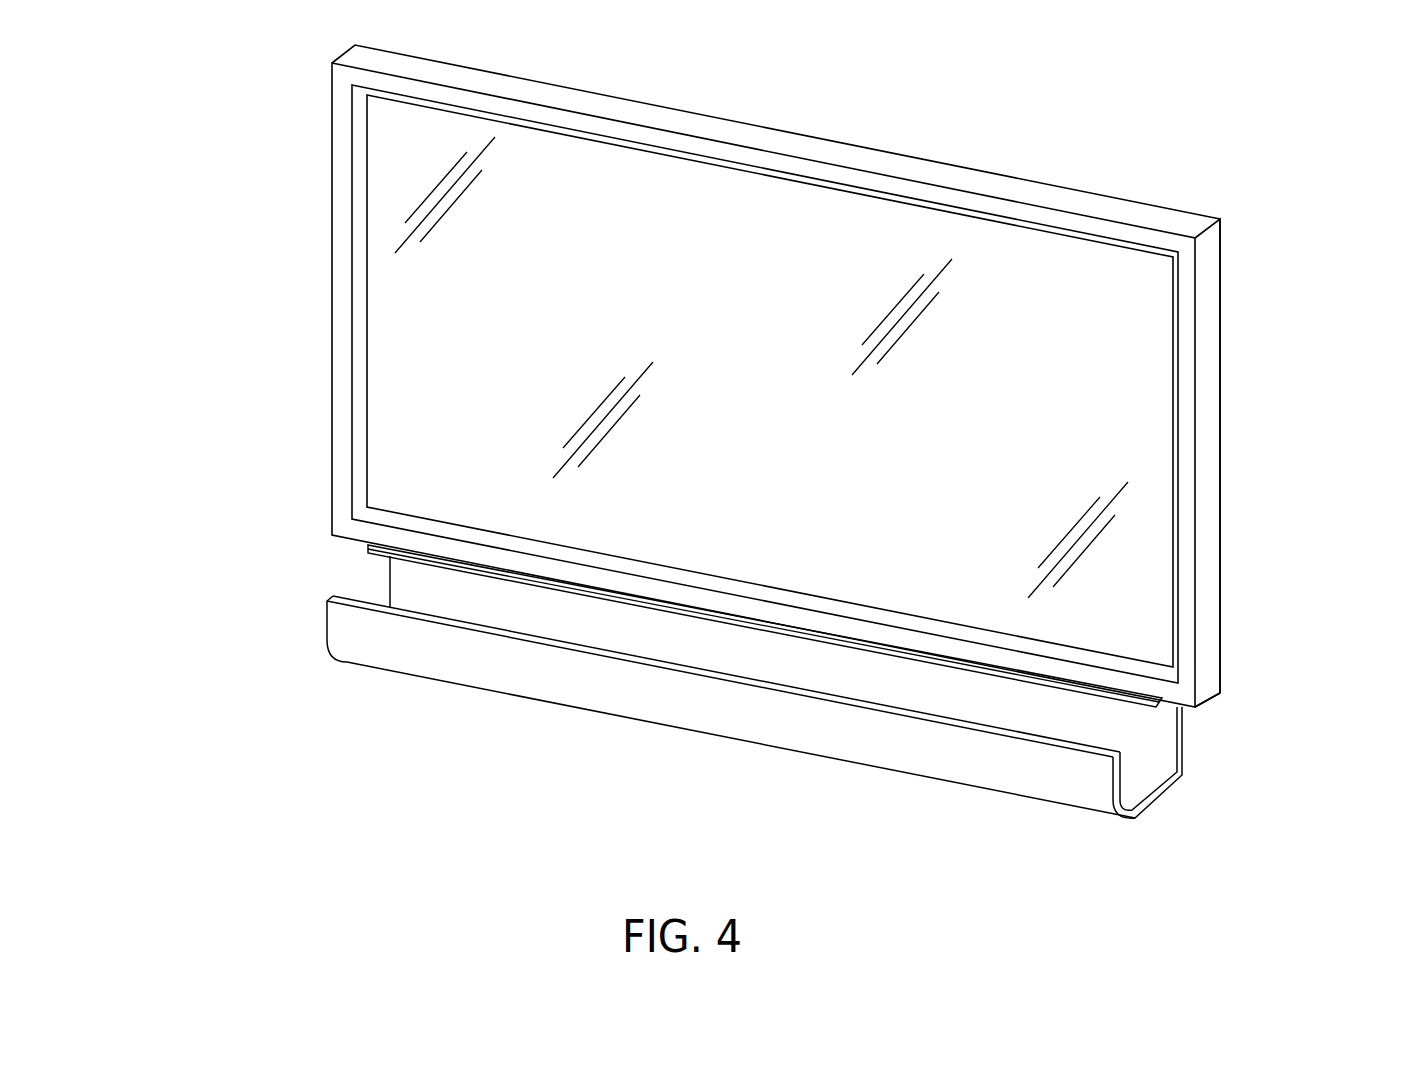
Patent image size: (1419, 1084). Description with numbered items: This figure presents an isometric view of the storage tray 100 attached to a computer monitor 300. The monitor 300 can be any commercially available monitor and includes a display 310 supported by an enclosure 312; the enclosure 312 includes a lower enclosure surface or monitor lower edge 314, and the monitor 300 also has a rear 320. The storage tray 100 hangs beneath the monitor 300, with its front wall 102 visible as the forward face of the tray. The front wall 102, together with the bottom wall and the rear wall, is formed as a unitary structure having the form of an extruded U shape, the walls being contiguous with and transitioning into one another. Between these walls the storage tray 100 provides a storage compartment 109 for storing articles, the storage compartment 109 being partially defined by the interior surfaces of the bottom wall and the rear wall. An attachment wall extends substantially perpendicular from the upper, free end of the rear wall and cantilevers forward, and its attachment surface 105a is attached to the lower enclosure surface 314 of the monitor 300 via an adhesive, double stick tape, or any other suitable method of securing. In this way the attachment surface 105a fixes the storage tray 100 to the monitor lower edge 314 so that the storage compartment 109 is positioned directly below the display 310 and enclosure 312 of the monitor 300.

The storage tray 100 is at (279, 682).
The front wall 102 is at (667, 701).
The attachment surface 105a is at (898, 650).
The storage compartment 109 is at (557, 621).
The monitor 300 is at (1254, 193).
The display 310 is at (450, 362).
The enclosure 312 is at (1208, 466).
The lower enclosure surface 314 is at (1208, 704).
The rear 320 is at (1228, 596).